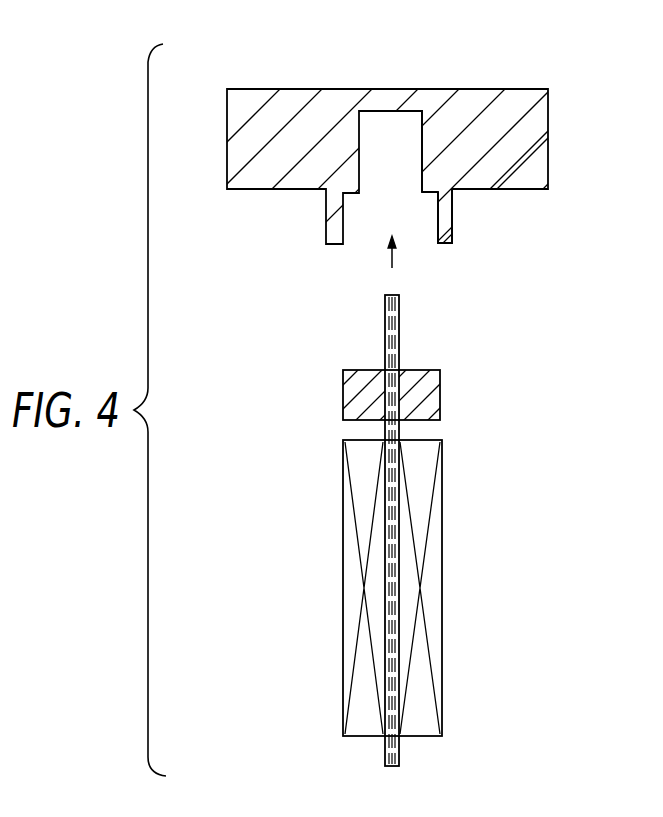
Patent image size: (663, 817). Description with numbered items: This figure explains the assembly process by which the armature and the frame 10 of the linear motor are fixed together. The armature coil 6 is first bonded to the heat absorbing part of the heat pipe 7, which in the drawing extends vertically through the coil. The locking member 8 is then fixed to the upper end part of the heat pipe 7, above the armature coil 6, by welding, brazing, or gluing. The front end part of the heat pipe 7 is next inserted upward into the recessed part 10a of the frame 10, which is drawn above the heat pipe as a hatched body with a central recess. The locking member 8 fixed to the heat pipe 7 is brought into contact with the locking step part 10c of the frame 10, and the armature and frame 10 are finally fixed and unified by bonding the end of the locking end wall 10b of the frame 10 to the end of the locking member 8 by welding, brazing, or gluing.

The frame 10 is at (540, 113).
The recessed part 10a is at (412, 151).
The locking end wall 10b is at (443, 212).
The locking step part 10c is at (432, 193).
The heat pipe 7 is at (400, 325).
The locking member 8 is at (433, 385).
The armature coil 6 is at (436, 512).